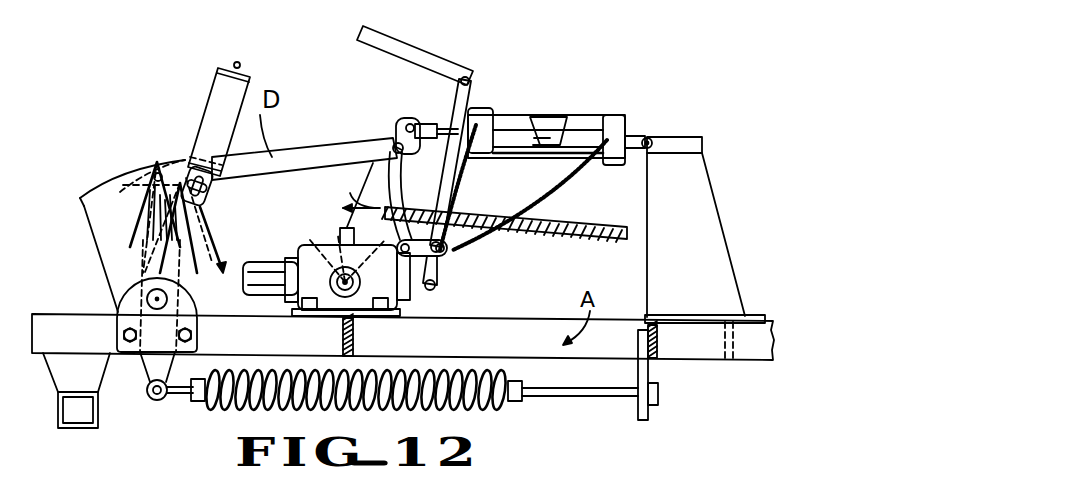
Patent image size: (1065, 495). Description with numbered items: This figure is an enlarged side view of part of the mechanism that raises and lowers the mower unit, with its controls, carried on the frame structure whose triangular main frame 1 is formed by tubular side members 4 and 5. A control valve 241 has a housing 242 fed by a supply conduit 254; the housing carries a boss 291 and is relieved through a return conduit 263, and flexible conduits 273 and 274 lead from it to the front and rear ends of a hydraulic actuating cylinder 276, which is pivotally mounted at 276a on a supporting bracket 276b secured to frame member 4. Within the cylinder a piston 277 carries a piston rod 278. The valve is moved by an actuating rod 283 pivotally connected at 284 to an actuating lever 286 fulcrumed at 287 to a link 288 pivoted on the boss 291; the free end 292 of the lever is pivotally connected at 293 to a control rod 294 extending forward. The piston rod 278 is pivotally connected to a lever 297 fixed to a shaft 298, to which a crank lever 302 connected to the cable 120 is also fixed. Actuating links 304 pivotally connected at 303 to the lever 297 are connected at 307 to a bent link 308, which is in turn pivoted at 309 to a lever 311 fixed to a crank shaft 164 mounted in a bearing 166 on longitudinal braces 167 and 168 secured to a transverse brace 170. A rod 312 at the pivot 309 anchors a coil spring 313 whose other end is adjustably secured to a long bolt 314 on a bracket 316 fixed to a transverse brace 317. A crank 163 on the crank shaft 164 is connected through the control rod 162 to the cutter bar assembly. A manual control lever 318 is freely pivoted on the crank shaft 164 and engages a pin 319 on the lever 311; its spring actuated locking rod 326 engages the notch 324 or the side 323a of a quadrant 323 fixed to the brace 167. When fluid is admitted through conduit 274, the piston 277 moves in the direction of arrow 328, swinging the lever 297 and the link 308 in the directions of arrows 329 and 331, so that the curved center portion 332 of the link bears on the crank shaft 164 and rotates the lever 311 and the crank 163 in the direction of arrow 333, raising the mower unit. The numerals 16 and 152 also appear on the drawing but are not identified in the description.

The main frame 1 is at (530, 338).
The tubular side member 4 is at (58, 318).
The tubular side member 5 is at (490, 347).
The deck 16 is at (507, 285).
The cable 120 is at (595, 238).
The hitch tube 152 is at (78, 430).
The control rod 162 is at (321, 335).
The crank 163 is at (228, 331).
The crank shaft 164 is at (150, 295).
The bearing 166 is at (124, 310).
The longitudinally extending brace 167 is at (355, 338).
The longitudinally extending brace 168 is at (87, 344).
The transverse brace 170 is at (362, 347).
The control valve 241 is at (318, 255).
The housing 242 is at (311, 286).
The supply conduit 254 is at (395, 300).
The return conduit 263 is at (340, 242).
The flexible conduit 273 is at (465, 165).
The flexible conduit 274 is at (550, 193).
The hydraulic actuating cylinder 276 is at (598, 117).
The pivotal mounting 276a is at (652, 140).
The supporting bracket 276b is at (702, 289).
The piston 277 is at (612, 130).
The piston rod 278 is at (592, 95).
The actuating rod 283 is at (457, 285).
The pivotal connection 284 is at (455, 255).
The actuating lever 286 is at (456, 100).
The fulcrum 287 is at (460, 217).
The link 288 is at (436, 200).
The boss 291 is at (360, 282).
The free end of lever 292 is at (462, 100).
The pivotal connection 293 is at (467, 77).
The control rod 294 is at (378, 38).
The lever 297 is at (395, 122).
The shaft 298 is at (271, 270).
The crank lever 302 is at (426, 156).
The pivotal connection 303 is at (395, 140).
The actuating link 304 is at (312, 142).
The pivotal connection 307 is at (147, 172).
The link 308 is at (145, 228).
The pivot 309 is at (160, 400).
The lever 311 is at (123, 248).
The rod 312 is at (185, 398).
The coil spring 313 is at (366, 408).
The long bolt 314 is at (590, 400).
The bracket 316 is at (650, 412).
The transverse brace 317 is at (658, 338).
The manual control lever 318 is at (228, 75).
The pin 319 is at (118, 185).
The quadrant 323 is at (130, 180).
The side of quadrant 323a is at (202, 205).
The notch 324 is at (80, 197).
The spring actuated locking rod 326 is at (258, 44).
The arrow 328 is at (530, 90).
The arrow 329 is at (343, 192).
The arrow 331 is at (130, 215).
The curved center portion 332 is at (206, 224).
The arrow 333 is at (278, 343).